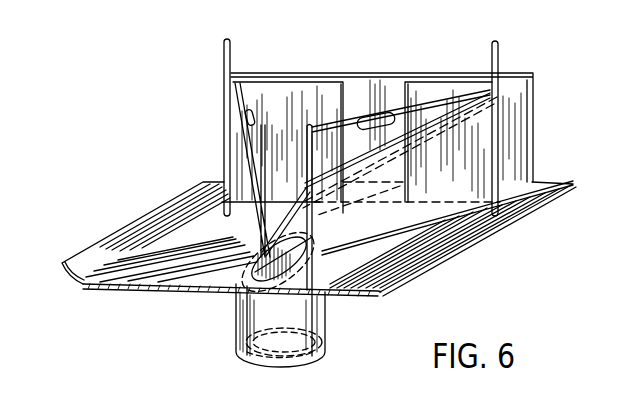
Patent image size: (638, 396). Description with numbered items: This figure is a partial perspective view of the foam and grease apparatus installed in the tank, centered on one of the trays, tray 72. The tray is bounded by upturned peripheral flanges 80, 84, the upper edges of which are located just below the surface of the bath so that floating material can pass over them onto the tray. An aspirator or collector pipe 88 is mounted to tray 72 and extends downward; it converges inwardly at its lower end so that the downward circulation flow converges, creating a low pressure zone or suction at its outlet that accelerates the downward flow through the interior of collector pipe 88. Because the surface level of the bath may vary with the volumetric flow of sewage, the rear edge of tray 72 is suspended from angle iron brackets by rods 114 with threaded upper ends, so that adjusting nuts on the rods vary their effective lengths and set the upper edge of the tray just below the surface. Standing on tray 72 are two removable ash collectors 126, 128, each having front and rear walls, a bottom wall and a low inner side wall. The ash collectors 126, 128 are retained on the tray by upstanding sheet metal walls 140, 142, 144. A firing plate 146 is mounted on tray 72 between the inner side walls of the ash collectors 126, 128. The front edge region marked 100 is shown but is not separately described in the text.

The tray 72 is at (100, 290).
The upturned peripheral flange 80 is at (182, 215).
The upturned peripheral flange 84 is at (497, 228).
The collector pipe 88 is at (236, 341).
The front lip of base plate 100 is at (240, 284).
The rods 114 is at (225, 62).
The ash collector 126 is at (268, 96).
The ash collector 128 is at (438, 97).
The upstanding sheet metal wall 140 is at (378, 80).
The upstanding sheet metal wall 142 is at (417, 207).
The upstanding sheet metal wall 144 is at (248, 170).
The firing plate 146 is at (497, 96).